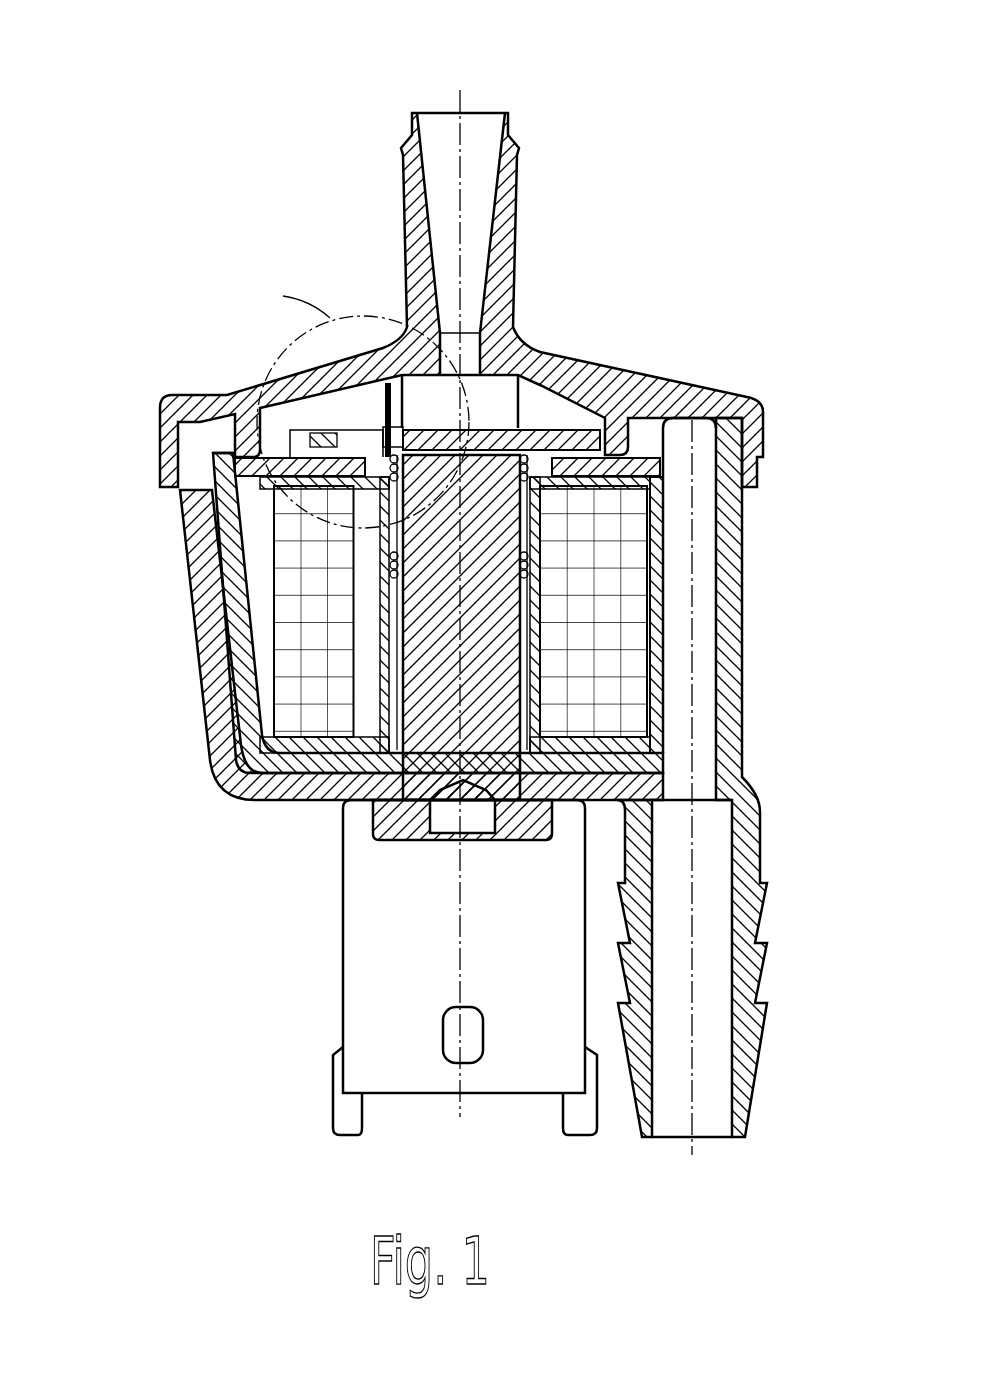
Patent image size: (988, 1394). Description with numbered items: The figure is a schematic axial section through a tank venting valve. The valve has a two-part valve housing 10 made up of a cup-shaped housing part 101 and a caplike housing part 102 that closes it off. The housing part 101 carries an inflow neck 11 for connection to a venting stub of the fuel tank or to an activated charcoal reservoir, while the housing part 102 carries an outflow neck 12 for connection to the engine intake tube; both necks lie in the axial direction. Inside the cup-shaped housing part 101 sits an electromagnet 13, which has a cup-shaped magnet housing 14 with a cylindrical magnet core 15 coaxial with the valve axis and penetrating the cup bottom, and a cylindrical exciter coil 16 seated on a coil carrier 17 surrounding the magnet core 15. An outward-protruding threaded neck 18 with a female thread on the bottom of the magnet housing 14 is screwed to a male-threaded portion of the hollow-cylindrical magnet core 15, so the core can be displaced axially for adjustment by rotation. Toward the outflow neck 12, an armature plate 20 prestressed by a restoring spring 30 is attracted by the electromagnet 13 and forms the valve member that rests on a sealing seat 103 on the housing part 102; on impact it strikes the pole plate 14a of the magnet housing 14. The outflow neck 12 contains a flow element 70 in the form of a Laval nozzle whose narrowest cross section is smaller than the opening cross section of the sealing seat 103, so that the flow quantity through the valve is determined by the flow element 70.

The valve housing 10 is at (457, 610).
The inflow neck 11 is at (680, 1140).
The outflow neck 12 is at (482, 158).
The electromagnet 13 is at (212, 763).
The magnet housing 14 is at (374, 611).
The pole plate 14a is at (230, 412).
The magnet core 15 is at (440, 720).
The exciter coil 16 is at (305, 604).
The coil carrier 17 is at (573, 800).
The threaded neck 18 is at (383, 823).
The armature plate 20 is at (582, 430).
The restoring spring 30 is at (240, 480).
The flow element 70 is at (452, 336).
The cup-shaped housing part 101 is at (745, 578).
The caplike housing part 102 is at (575, 432).
The sealing seat 103 is at (461, 244).